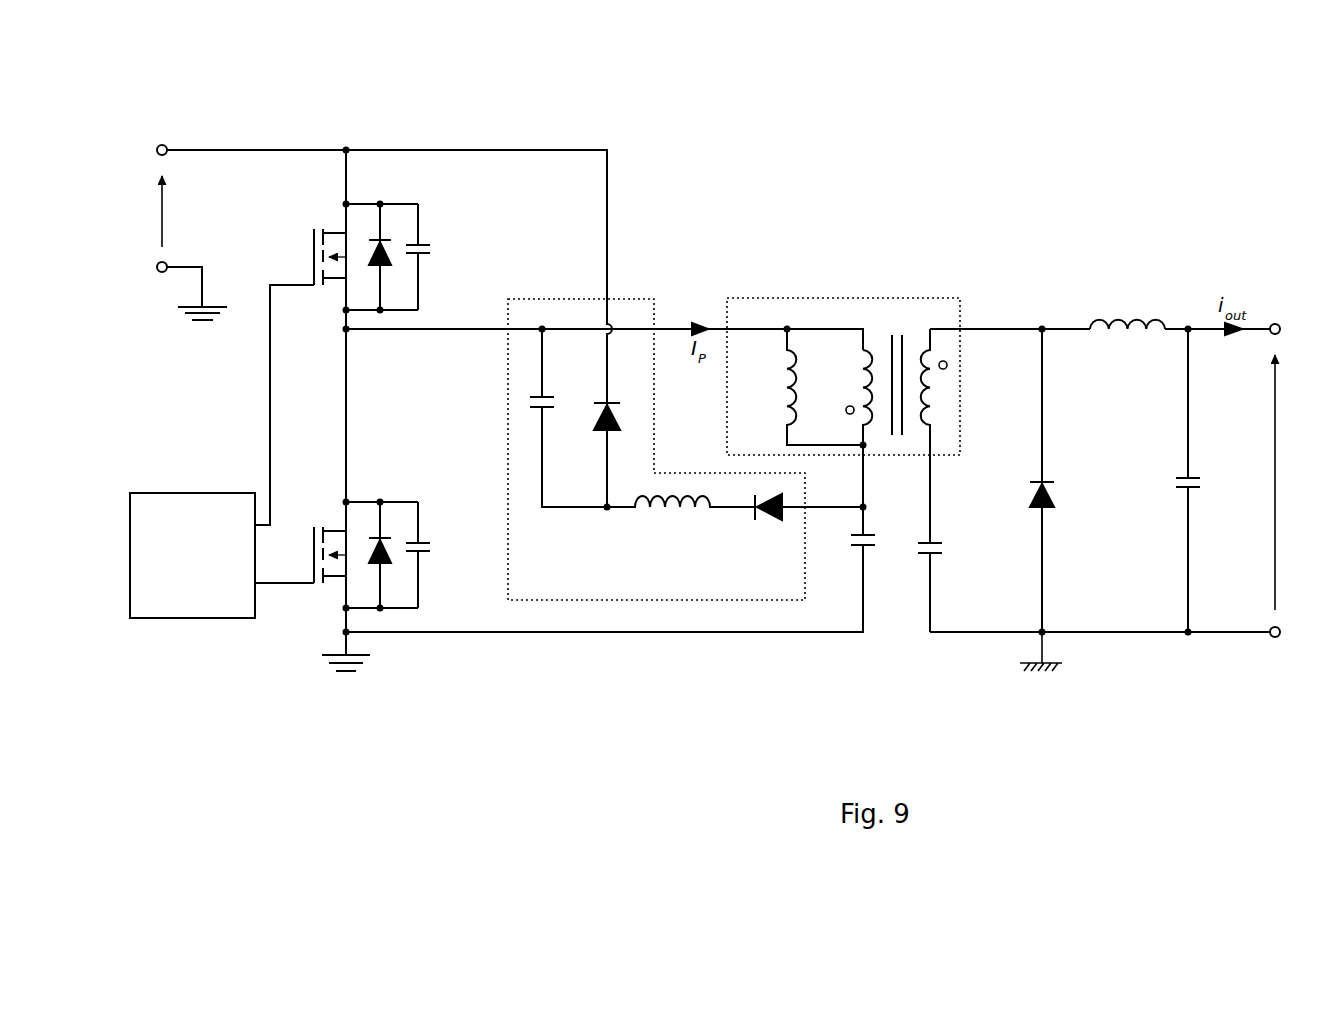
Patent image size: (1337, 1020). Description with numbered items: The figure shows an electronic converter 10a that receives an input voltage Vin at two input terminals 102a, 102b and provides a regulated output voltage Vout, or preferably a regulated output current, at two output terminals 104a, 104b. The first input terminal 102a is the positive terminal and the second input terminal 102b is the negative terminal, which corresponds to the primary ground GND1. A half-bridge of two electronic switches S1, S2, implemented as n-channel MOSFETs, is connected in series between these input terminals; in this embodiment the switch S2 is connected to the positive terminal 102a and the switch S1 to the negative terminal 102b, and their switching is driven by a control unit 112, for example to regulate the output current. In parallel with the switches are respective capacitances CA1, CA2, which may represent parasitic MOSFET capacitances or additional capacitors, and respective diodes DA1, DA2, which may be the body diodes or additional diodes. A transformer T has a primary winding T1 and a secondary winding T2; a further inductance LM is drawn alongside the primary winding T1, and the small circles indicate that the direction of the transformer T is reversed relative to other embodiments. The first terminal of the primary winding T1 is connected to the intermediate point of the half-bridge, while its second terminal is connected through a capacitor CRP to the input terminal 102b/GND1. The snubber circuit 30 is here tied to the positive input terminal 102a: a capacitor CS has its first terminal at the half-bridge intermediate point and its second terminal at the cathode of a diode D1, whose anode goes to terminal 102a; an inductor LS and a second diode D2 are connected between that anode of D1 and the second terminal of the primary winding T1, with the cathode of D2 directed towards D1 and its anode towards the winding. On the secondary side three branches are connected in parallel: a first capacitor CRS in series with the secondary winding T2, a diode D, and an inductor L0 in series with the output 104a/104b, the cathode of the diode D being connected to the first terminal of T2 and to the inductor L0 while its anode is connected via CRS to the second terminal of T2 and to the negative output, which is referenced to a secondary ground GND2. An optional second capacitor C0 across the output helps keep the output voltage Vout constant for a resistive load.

The electronic converter 10a is at (946, 164).
The snubber circuit 30 is at (633, 291).
The first input terminal 102a is at (176, 134).
The second input terminal 102b is at (160, 280).
The first output terminal 104a is at (1283, 307).
The second output terminal 104b is at (1275, 644).
The control unit 112 is at (202, 620).
The first electronic switch S1 is at (326, 511).
The second electronic switch S2 is at (326, 212).
The capacitance CA1 is at (429, 229).
The capacitance CA2 is at (429, 527).
The diode DA1 is at (400, 266).
The diode DA2 is at (400, 564).
The snubber capacitor CS is at (519, 406).
The first snubber diode D1 is at (590, 424).
The second snubber diode D2 is at (754, 532).
The snubber inductor LS is at (676, 515).
The magnetizing inductance LM is at (785, 384).
The transformer T is at (882, 291).
The primary winding T1 is at (865, 321).
The secondary winding T2 is at (919, 321).
The primary capacitor CRP is at (868, 552).
The first capacitor CRS is at (940, 562).
The diode D is at (1026, 481).
The inductor L0 is at (1126, 305).
The second capacitor C0 is at (1166, 483).
The ground GND1 is at (347, 680).
The secondary ground GND2 is at (1042, 678).
The input voltage Vin is at (183, 211).
The regulated output voltage Vout is at (1259, 482).